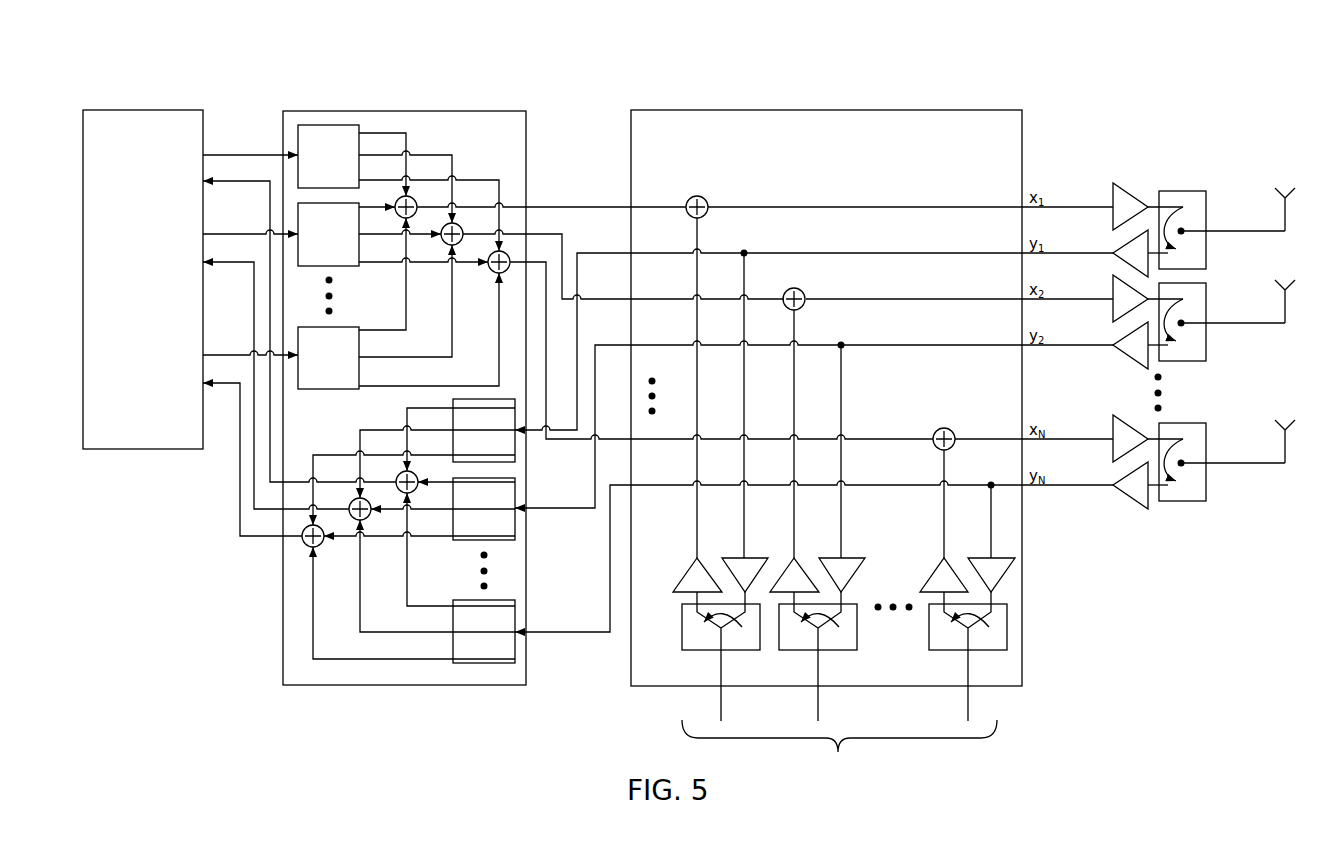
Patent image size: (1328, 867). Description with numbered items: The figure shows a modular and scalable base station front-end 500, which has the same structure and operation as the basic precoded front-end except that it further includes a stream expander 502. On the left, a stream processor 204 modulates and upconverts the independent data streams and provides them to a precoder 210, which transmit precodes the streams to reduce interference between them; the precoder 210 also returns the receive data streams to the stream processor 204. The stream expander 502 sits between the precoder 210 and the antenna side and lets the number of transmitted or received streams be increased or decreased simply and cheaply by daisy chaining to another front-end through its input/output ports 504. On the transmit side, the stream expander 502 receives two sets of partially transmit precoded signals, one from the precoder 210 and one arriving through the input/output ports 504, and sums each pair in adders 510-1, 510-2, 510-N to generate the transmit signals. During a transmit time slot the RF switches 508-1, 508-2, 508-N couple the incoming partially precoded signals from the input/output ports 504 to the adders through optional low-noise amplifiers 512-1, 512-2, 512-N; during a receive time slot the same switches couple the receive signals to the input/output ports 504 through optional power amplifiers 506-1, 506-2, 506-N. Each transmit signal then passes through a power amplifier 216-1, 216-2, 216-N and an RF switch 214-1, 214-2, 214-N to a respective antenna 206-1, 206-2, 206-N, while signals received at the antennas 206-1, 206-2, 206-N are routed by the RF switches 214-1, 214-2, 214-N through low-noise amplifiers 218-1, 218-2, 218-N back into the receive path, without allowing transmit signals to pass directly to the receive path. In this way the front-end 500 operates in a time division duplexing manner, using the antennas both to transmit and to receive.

The stream processor 204 is at (143, 279).
The precoder 210 is at (398, 110).
The stream expander 502 is at (803, 110).
The adder 510-1 is at (725, 184).
The adder 510-2 is at (800, 288).
The adder 510-N is at (972, 416).
The low-noise amplifier 512-1 is at (692, 561).
The low-noise amplifier 512-2 is at (788, 561).
The low-noise amplifier 512-N is at (936, 561).
The power amplifier 506-1 is at (742, 565).
The power amplifier 506-2 is at (846, 563).
The power amplifier 506-N is at (996, 563).
The RF switch 508-1 is at (694, 650).
The RF switch 508-2 is at (855, 650).
The RF switch 508-N is at (1003, 650).
The power amplifier 216-1 is at (1117, 205).
The power amplifier 216-2 is at (1117, 297).
The power amplifier 216-N is at (1117, 437).
The low-noise amplifier 218-1 is at (1117, 251).
The low-noise amplifier 218-2 is at (1117, 343).
The low-noise amplifier 218-N is at (1117, 483).
The RF switch 214-1 is at (1200, 206).
The RF switch 214-2 is at (1200, 298).
The RF switch 214-N is at (1200, 438).
The antenna 206-1 is at (1272, 188).
The antenna 206-2 is at (1272, 280).
The antenna 206-N is at (1272, 420).
The input/output ports 504 is at (839, 752).
The BS front-end 500 is at (1134, 718).